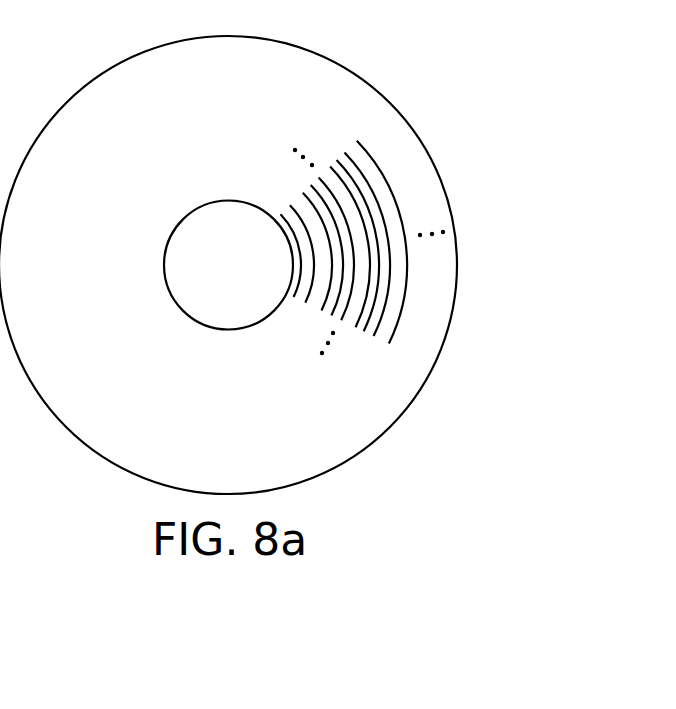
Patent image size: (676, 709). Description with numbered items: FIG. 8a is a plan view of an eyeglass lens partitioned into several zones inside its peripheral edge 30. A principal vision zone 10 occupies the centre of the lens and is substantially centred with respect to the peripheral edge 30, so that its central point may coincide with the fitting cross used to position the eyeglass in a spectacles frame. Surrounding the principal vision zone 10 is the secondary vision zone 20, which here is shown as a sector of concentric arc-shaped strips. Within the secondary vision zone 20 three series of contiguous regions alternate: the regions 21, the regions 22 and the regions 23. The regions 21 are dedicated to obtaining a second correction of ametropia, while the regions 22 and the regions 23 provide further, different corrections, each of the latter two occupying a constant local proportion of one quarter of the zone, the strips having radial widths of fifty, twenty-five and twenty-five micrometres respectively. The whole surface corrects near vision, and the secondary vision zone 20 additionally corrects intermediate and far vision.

The peripheral edge 30 is at (342, 64).
The secondary vision zone 20 is at (106, 218).
The principal vision zone 10 is at (244, 279).
The regions of the first series 21 is at (397, 245).
The regions of the second series 22 is at (358, 327).
The regions of the third series 23 is at (336, 156).